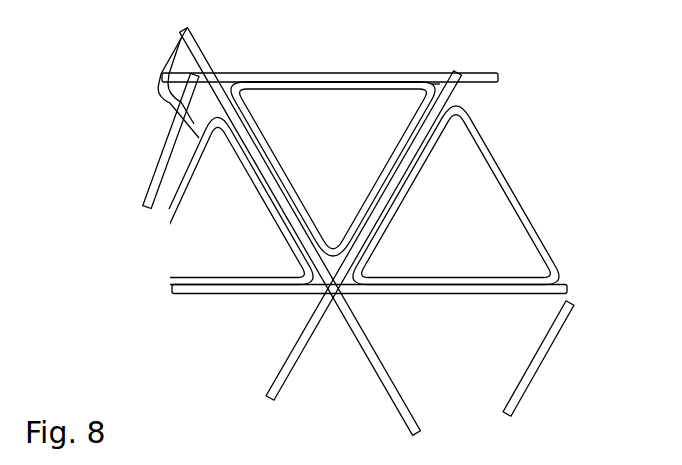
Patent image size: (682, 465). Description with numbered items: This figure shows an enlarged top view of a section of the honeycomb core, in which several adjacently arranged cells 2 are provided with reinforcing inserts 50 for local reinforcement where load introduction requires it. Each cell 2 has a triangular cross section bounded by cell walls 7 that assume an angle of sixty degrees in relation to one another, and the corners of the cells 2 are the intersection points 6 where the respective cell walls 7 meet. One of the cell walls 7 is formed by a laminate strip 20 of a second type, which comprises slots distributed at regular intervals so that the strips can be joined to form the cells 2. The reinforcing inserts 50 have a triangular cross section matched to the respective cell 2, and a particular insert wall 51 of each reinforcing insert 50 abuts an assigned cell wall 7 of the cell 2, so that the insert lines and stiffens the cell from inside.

The cell 2 is at (340, 211).
The intersection point 6 is at (217, 72).
The cell wall 7 is at (393, 72).
The laminate strip 20 is at (437, 88).
The reinforcing insert 50 is at (337, 88).
The insert wall 51 is at (403, 143).